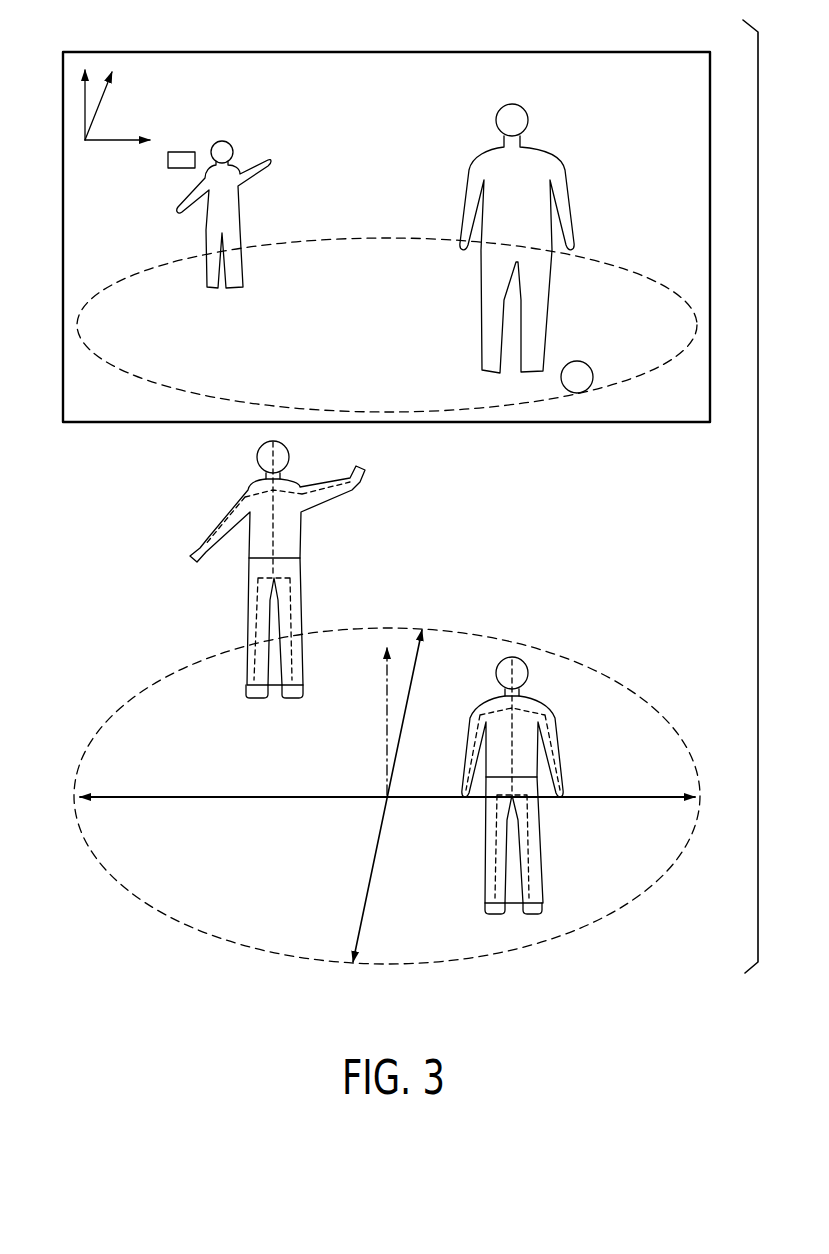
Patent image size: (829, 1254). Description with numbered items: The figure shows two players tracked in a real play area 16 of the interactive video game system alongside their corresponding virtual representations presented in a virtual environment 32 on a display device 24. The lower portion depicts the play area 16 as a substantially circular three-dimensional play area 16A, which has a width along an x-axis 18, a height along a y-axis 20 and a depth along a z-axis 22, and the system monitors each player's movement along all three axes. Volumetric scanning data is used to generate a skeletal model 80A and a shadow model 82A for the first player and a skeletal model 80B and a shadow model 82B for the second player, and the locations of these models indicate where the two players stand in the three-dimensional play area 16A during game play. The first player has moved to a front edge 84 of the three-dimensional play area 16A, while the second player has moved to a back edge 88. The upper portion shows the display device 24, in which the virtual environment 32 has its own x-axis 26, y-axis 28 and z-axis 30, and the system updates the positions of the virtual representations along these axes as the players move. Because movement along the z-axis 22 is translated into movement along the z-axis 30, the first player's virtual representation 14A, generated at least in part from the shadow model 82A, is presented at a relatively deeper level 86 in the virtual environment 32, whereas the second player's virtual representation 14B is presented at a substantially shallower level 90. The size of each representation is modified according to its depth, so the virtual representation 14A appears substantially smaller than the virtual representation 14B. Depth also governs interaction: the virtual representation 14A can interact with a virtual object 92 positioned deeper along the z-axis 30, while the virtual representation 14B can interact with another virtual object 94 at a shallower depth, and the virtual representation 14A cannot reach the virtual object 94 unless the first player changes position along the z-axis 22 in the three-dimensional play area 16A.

The virtual representation 14A is at (256, 147).
The virtual representation 14B is at (556, 136).
The play area 16 is at (387, 710).
The 3D play area 16A is at (387, 710).
The x-axis 18 is at (277, 800).
The y-axis 20 is at (384, 727).
The z-axis 22 is at (370, 873).
The display device 24 is at (694, 51).
The x-axis 26 is at (112, 143).
The y-axis 28 is at (82, 114).
The z-axis 30 is at (100, 116).
The virtual environment 32 is at (408, 92).
The skeletal model 80A is at (270, 562).
The skeletal model 80B is at (544, 759).
The shadow model 82A is at (256, 449).
The shadow model 82B is at (531, 667).
The front edge 84 is at (387, 710).
The level 86 is at (387, 325).
The back edge 88 is at (529, 955).
The level 90 is at (521, 399).
The virtual object 92 is at (180, 151).
The virtual object 94 is at (584, 362).